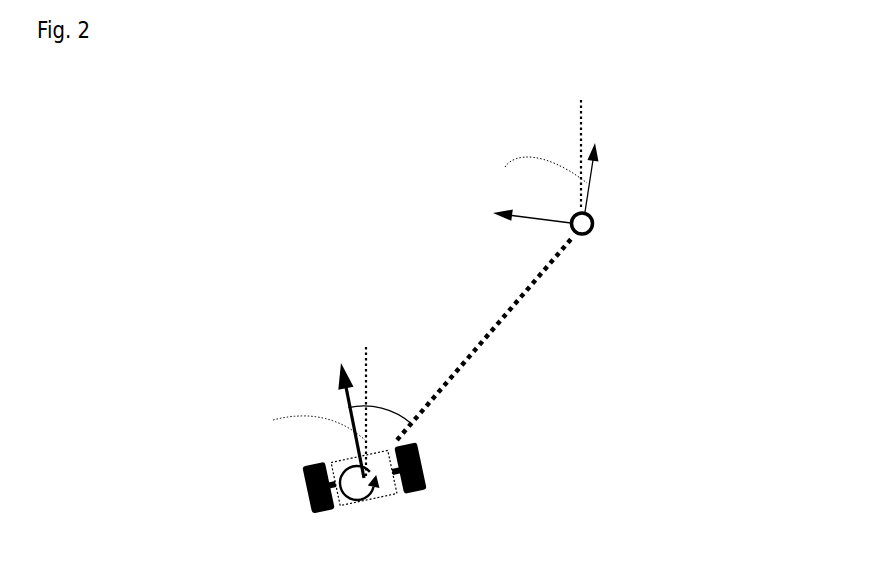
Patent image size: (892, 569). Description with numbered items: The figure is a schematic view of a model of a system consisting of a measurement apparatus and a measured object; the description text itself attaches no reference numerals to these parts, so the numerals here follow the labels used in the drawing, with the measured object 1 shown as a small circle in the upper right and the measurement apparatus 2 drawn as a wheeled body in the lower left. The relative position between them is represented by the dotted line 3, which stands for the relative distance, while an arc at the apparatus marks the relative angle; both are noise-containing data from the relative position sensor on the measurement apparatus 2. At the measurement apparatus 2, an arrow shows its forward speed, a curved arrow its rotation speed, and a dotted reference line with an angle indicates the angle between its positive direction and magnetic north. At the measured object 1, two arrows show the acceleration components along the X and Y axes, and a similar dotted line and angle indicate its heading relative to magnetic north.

The measured object 1 is at (550, 196).
The measurement apparatus 2 is at (408, 428).
The relative position vector 3 is at (460, 339).